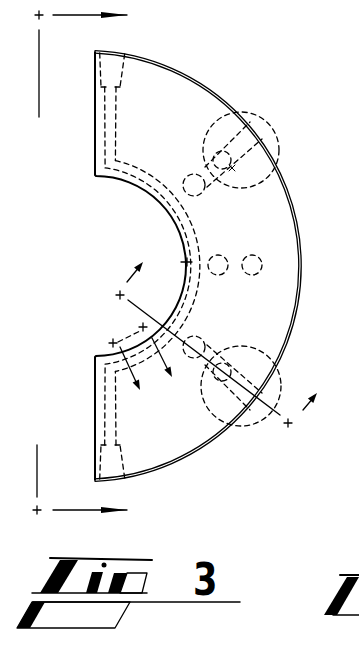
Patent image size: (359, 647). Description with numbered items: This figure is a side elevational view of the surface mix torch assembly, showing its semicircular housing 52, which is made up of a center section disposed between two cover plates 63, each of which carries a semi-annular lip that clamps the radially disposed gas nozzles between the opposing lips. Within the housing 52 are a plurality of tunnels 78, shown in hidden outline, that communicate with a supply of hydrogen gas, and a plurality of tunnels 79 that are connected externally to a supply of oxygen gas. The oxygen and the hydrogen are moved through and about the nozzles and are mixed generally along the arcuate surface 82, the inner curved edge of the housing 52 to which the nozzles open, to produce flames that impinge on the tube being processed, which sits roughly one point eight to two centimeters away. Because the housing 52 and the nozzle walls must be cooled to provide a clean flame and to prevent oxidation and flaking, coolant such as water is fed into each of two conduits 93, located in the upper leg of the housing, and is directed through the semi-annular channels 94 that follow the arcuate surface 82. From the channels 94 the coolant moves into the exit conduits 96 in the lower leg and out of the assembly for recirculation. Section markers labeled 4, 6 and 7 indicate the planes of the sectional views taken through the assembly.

The housing 52 is at (296, 204).
The cover plates 63 is at (289, 250).
The tunnels 78 is at (241, 112).
The tunnels 79 is at (243, 168).
The arcuate surface 82 is at (128, 182).
The conduits 93 is at (103, 124).
The semi-annular channels 94 is at (173, 262).
The exit conduits 96 is at (103, 397).
The section line 4- 4 is at (90, 264).
The section line 6- 6 is at (228, 322).
The section line 7- 7 is at (147, 381).